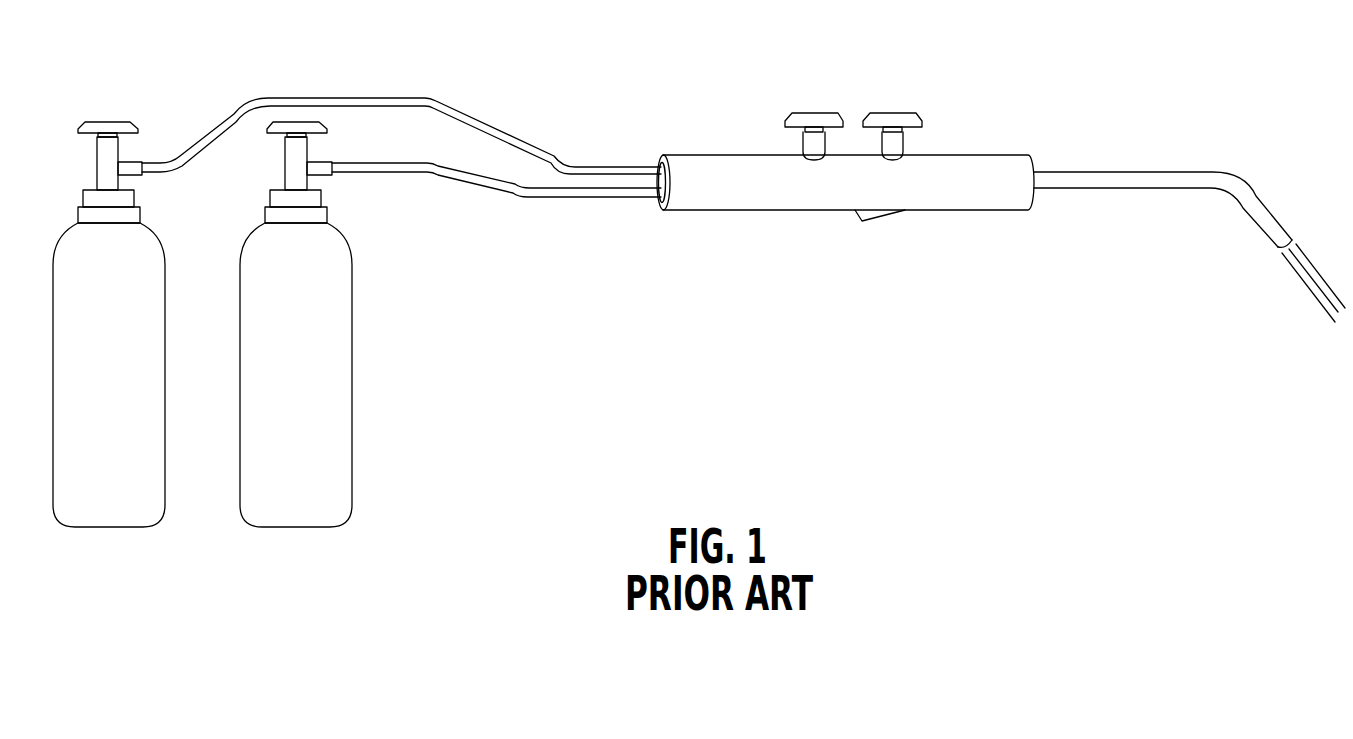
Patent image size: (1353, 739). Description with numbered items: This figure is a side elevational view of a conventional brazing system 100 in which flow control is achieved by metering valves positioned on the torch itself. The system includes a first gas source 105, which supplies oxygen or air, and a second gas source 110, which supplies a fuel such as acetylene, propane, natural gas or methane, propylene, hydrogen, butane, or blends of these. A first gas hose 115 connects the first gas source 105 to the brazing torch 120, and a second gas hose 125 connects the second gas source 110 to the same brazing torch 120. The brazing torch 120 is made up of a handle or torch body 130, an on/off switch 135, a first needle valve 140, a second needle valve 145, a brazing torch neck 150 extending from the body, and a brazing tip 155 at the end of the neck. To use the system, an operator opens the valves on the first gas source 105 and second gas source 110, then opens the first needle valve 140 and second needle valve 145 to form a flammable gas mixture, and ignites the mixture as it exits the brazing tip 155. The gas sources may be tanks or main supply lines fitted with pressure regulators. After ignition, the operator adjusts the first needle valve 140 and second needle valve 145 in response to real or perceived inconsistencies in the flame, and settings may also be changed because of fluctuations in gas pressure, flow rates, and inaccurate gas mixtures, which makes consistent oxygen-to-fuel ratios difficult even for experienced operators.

The brazing system 100 is at (1262, 137).
The first gas source 105 is at (102, 527).
The second gas source 110 is at (295, 527).
The first gas hose 115 is at (358, 98).
The brazing torch 120 is at (698, 192).
The second gas hose 125 is at (610, 197).
The torch body 130 is at (845, 226).
The on/off switch 135 is at (873, 217).
The first needle valve 140 is at (893, 113).
The second needle valve 145 is at (810, 113).
The brazing torch neck 150 is at (1130, 170).
The brazing tip 155 is at (1282, 213).